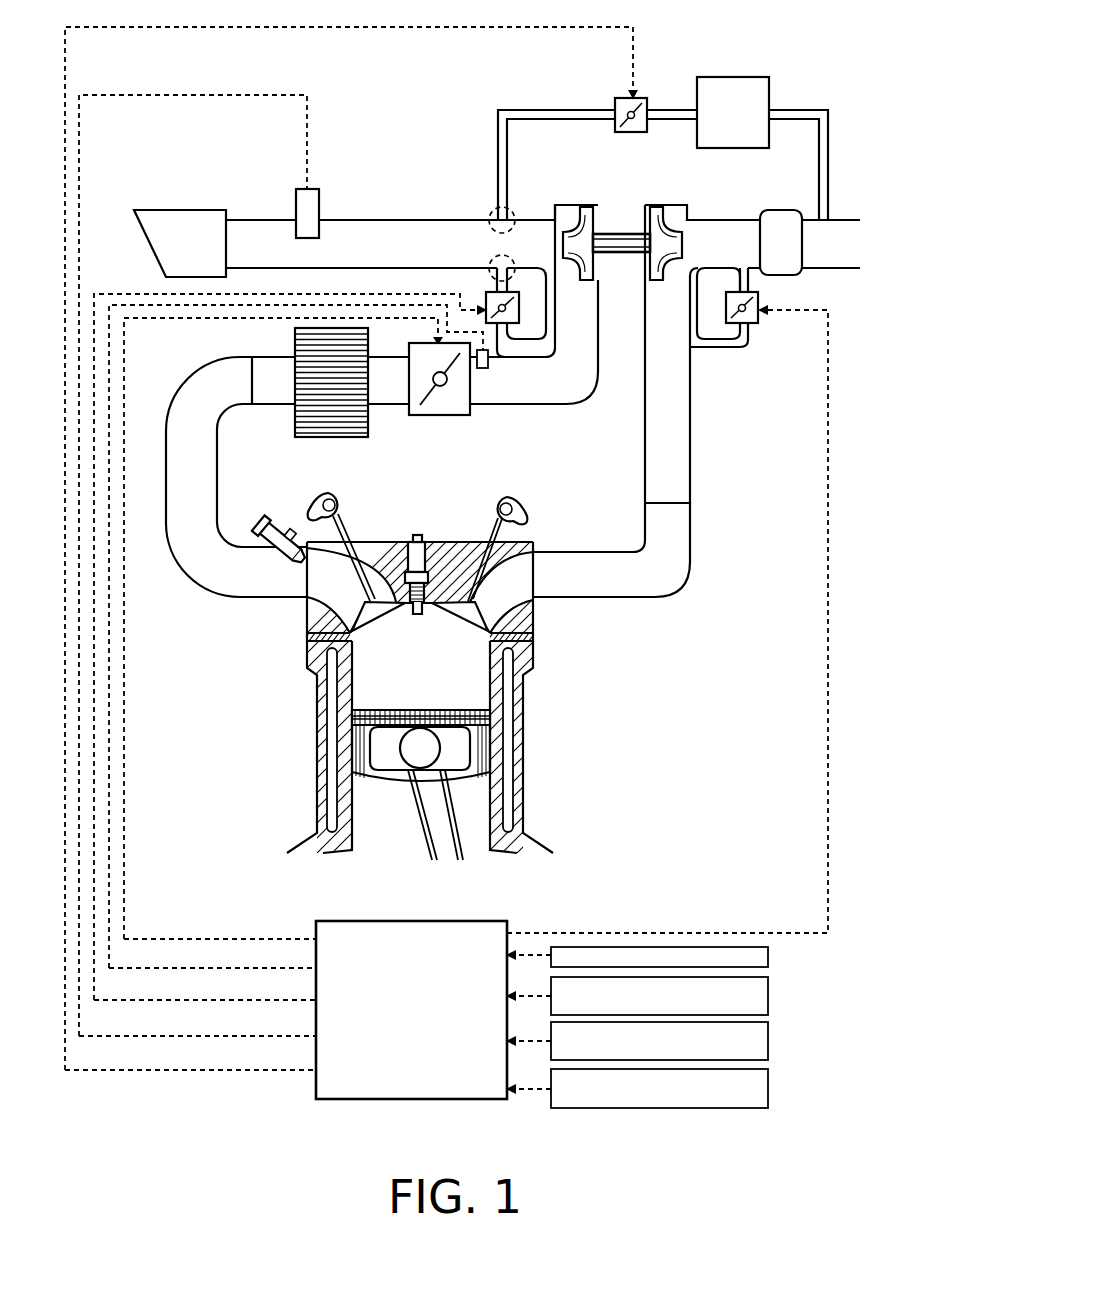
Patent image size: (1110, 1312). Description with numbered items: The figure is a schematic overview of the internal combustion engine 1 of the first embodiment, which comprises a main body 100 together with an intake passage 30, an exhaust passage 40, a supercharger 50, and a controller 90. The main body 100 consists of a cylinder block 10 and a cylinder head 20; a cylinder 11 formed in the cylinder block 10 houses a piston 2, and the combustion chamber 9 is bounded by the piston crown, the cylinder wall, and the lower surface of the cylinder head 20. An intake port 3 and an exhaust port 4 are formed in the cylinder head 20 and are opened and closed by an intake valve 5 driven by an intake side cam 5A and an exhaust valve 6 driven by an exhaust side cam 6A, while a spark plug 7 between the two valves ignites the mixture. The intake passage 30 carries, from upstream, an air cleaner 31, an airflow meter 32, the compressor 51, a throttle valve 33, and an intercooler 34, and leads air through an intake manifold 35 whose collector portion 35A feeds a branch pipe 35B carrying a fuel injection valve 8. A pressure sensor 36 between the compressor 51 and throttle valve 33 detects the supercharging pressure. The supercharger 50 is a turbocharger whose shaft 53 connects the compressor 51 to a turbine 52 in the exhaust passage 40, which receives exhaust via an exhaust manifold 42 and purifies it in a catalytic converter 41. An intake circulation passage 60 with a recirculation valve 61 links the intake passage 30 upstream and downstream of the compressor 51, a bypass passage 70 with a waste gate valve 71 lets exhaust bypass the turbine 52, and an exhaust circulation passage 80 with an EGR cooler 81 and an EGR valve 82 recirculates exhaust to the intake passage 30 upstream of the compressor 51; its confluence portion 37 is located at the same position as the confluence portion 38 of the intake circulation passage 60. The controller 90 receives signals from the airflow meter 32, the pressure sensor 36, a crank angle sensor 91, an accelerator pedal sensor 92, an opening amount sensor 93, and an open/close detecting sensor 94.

The internal combustion engine 1 is at (820, 60).
The piston 2 is at (385, 745).
The intake port 3 is at (305, 580).
The exhaust port 4 is at (540, 576).
The intake valve 5 is at (352, 545).
The intake side cam 5A is at (320, 496).
The exhaust valve 6 is at (490, 550).
The exhaust side cam 6A is at (518, 506).
The spark plug 7 is at (417, 535).
The fuel injection valve 8 is at (278, 521).
The combustion chamber 9 is at (365, 680).
The cylinder block 10 is at (523, 792).
The cylinder 11 is at (478, 688).
The cylinder head 20 is at (540, 631).
The intake passage 30 is at (410, 220).
The air cleaner 31 is at (186, 210).
The airflow meter 32 is at (320, 200).
The throttle valve 33 is at (456, 415).
The intercooler 34 is at (370, 432).
The intake manifold 35 is at (221, 505).
The collector portion 35A is at (186, 400).
The branch pipe 35B is at (193, 553).
The pressure sensor 36 is at (490, 368).
The confluence portion 37 is at (490, 210).
The confluence portion 38 is at (514, 262).
The exhaust passage 40 is at (690, 452).
The catalytic converter 41 is at (781, 218).
The exhaust manifold 42 is at (660, 597).
The supercharger 50 is at (622, 208).
The compressor 51 is at (588, 210).
The turbine 52 is at (661, 210).
The shaft 53 is at (621, 209).
The intake circulation passage 60 is at (556, 326).
The recirculation valve 61 is at (519, 306).
The bypass passage 70 is at (723, 347).
The waste gate valve 71 is at (762, 302).
The exhaust circulation passage 80 is at (520, 110).
The EGR cooler 81 is at (733, 86).
The EGR valve 82 is at (628, 98).
The controller 90 is at (410, 1099).
The crank angle sensor 91 is at (768, 957).
The accelerator pedal sensor 92 is at (768, 998).
The opening amount sensor 93 is at (768, 1043).
The open/close detecting sensor 94 is at (768, 1088).
The main body 100 is at (232, 728).